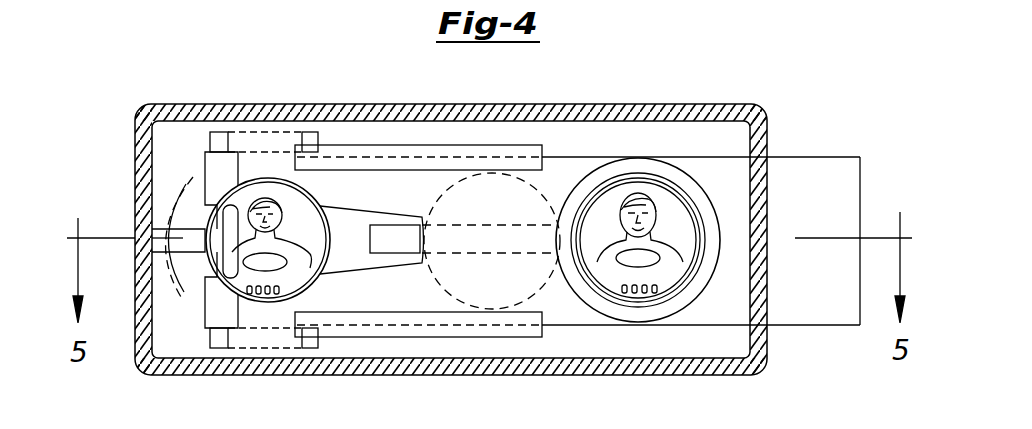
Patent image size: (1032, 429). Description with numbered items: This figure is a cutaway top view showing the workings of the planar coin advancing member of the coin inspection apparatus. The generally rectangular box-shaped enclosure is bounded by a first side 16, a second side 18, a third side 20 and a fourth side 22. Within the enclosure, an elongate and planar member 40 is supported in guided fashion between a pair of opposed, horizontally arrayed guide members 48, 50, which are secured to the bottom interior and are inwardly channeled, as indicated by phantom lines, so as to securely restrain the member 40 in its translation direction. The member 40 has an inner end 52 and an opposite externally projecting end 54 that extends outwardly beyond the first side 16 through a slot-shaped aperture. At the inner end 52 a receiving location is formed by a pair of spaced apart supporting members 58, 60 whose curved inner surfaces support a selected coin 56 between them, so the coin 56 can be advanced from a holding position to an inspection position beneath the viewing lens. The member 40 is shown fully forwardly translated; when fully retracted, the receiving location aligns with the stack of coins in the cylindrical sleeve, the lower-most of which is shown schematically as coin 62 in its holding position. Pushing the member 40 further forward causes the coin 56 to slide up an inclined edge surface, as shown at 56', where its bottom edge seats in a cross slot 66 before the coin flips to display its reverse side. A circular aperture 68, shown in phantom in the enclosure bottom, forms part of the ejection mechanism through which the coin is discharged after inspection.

The first side 16 is at (767, 347).
The second side 18 is at (573, 376).
The third side 20 is at (135, 172).
The fourth side 22 is at (573, 106).
The elongate and planar member 40 is at (818, 208).
The guide member 48 is at (427, 316).
The guide member 50 is at (376, 152).
The inner end 52 is at (211, 162).
The externally projecting end 54 is at (860, 187).
The selected coin 56 is at (268, 240).
The coin in sliding position 56' is at (178, 218).
The supporting member 58 is at (268, 178).
The supporting member 60 is at (263, 318).
The lower-most coin 62 is at (632, 192).
The cross slot 66 is at (238, 240).
The circular aperture 68 is at (499, 285).